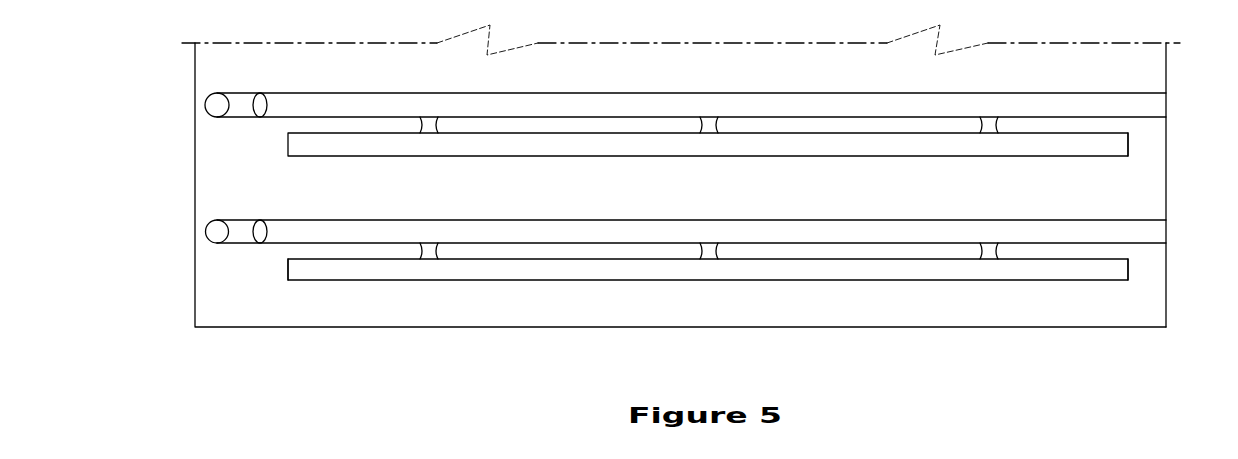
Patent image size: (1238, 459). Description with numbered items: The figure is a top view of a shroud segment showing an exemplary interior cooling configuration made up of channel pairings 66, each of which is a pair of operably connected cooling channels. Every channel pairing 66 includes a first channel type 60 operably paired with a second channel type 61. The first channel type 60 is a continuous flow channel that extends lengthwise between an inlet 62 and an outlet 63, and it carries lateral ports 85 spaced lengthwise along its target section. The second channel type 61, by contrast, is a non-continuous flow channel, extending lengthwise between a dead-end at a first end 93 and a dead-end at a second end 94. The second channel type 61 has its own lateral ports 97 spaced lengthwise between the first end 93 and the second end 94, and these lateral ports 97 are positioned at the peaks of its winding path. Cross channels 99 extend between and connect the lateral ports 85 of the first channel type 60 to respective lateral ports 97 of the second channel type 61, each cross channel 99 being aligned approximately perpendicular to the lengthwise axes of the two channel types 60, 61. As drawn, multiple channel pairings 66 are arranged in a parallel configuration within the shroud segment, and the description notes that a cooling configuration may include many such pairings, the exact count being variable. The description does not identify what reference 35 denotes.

The housing 35 is at (708, 307).
The first channel type 60 is at (502, 106).
The second channel type 61 is at (787, 143).
The inlet 62 is at (213, 107).
The outlet 63 is at (1166, 106).
The channel pairing 66 is at (275, 255).
The lateral ports 85 is at (710, 133).
The first end 93 is at (290, 262).
The second end 94 is at (1138, 143).
The lateral ports 97 is at (710, 134).
The cross channels 99 is at (988, 134).